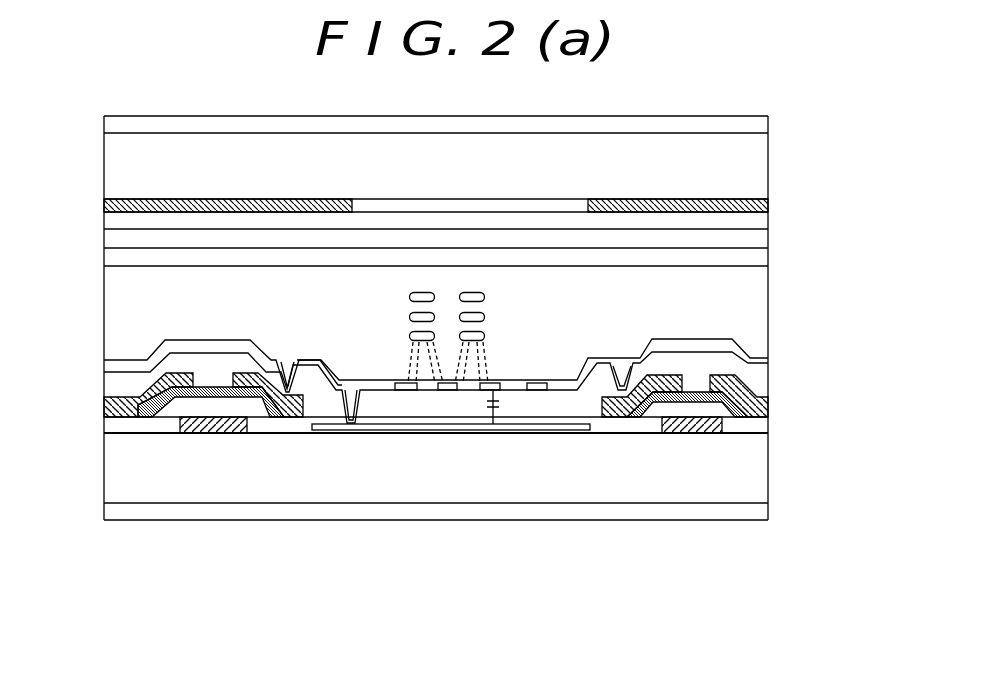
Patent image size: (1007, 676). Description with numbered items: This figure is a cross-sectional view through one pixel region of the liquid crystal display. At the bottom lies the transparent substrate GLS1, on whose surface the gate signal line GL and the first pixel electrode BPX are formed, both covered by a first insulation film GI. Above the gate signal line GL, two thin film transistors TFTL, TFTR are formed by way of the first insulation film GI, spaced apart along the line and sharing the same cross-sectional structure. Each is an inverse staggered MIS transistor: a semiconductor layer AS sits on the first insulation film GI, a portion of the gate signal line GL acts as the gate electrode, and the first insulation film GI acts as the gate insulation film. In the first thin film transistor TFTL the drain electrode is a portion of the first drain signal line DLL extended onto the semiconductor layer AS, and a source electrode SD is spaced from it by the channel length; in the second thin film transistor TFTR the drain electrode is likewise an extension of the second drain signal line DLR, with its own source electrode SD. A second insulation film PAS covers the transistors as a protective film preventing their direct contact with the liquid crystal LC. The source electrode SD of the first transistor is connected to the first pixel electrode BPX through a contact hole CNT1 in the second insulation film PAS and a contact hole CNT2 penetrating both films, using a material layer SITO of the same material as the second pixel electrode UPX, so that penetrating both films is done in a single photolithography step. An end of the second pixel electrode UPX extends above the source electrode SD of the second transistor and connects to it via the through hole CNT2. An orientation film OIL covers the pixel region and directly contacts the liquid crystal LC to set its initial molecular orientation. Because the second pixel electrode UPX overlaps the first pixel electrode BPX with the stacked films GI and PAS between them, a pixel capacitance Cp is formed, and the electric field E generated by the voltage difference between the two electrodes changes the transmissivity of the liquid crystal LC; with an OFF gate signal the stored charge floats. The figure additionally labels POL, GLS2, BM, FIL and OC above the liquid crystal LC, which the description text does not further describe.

The polarizer POL is at (767, 127).
The second glass substrate GLS2 is at (757, 163).
The black matrix BM is at (763, 206).
The color filter FIL is at (760, 224).
The overcoat layer OC is at (760, 243).
The orientation film OIL is at (747, 262).
The liquid crystal LC is at (486, 297).
The second insulation film PAS is at (762, 383).
The second drain signal line DLR is at (765, 403).
The semiconductor layer AS is at (203, 386).
The first insulation film GI is at (743, 428).
The gate signal line GL is at (707, 434).
The transparent substrate GLS1 is at (748, 490).
The source electrode SD is at (250, 373).
The first drain signal line DLL is at (127, 419).
The contact hole CNT1 is at (287, 354).
The contact hole CNT2 is at (350, 380).
The material layer SITO is at (306, 357).
The electric field E is at (460, 361).
The second pixel electrode UPX is at (403, 390).
The pixel capacitance Cp is at (507, 406).
The first pixel electrode BPX is at (323, 431).
The first thin film transistor TFTL is at (345, 559).
The second thin film transistor TFTR is at (750, 536).